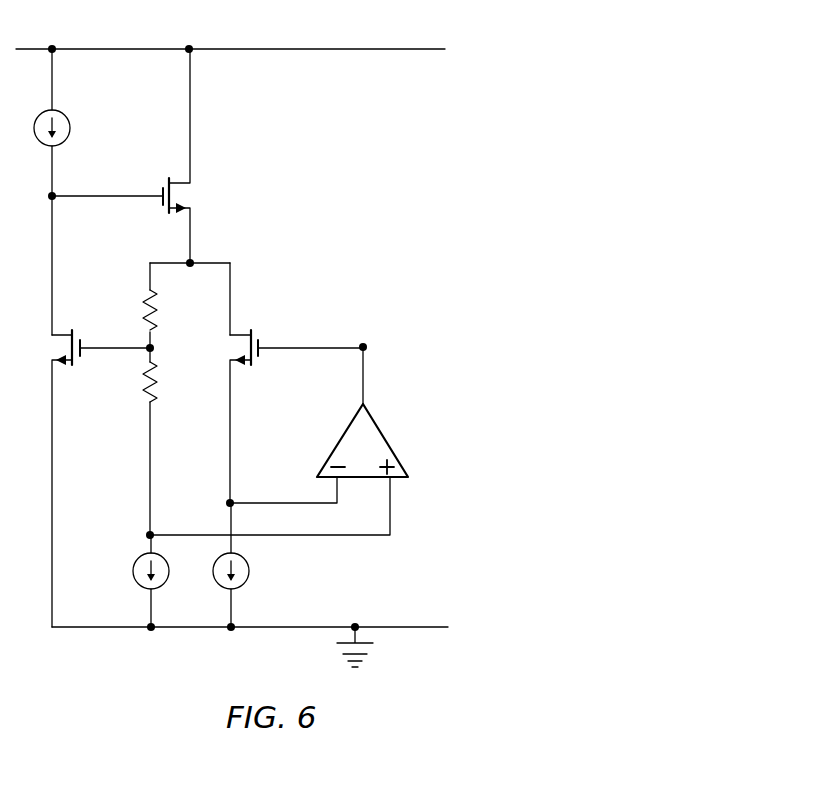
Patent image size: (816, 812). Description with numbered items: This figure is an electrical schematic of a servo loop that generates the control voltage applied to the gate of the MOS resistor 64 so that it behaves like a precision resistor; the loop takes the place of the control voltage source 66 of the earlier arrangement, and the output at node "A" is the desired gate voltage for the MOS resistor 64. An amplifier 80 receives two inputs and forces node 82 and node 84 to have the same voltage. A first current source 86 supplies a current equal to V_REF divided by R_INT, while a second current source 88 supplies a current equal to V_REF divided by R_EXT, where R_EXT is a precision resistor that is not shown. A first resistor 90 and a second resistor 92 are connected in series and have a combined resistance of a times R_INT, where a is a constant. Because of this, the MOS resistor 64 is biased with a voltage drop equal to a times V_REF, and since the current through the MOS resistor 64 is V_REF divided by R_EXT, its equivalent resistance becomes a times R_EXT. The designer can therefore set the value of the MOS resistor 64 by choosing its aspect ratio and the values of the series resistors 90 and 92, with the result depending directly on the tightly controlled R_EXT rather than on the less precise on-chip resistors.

The control voltage source 66 is at (415, 152).
The first resistor 90 is at (138, 310).
The second resistor 92 is at (138, 390).
The MOS resistor 64 is at (240, 333).
The amplifier 80 is at (388, 440).
The node 84 is at (228, 503).
The node 82 is at (148, 535).
The first current source 86 is at (133, 575).
The second current source 88 is at (250, 575).